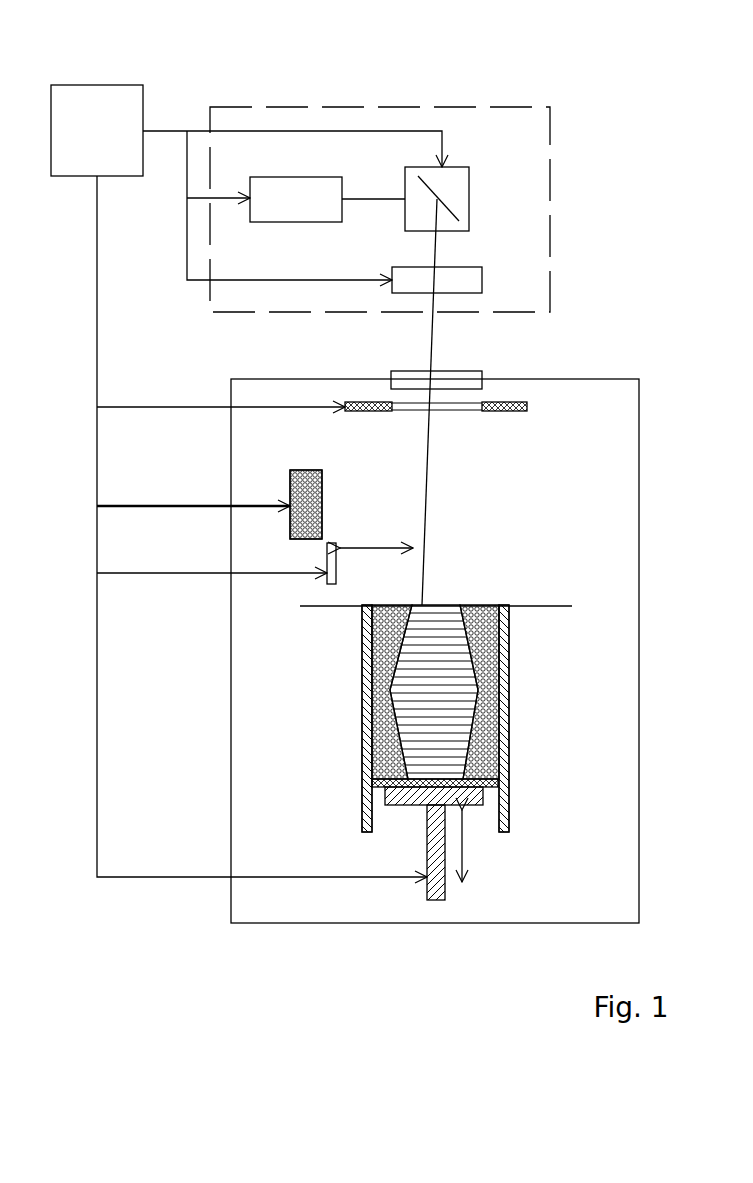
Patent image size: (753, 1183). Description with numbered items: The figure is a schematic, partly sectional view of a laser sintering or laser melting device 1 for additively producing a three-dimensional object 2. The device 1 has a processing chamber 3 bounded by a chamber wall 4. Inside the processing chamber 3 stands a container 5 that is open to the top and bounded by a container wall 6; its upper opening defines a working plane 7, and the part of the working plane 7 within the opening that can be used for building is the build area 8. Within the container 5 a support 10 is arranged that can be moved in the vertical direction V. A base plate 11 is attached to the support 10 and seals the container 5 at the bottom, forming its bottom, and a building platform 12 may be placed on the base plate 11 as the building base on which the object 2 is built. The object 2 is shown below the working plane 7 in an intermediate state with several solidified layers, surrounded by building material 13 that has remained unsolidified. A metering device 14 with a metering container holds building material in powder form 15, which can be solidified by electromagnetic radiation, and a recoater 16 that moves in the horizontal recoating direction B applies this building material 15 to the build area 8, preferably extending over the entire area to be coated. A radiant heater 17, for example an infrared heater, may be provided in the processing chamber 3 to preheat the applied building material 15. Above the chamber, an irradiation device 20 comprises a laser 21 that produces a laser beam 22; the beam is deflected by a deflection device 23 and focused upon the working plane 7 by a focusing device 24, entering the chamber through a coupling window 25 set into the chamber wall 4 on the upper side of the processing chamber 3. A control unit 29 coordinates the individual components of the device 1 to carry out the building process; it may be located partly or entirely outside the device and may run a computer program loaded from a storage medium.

The laser sintering or laser melting device 1 is at (613, 92).
The object 2 is at (452, 650).
The processing chamber 3 is at (578, 405).
The chamber wall 4 is at (231, 760).
The container 5 is at (509, 763).
The container wall 6 is at (505, 718).
The working plane 7 is at (545, 605).
The build area 8 is at (480, 605).
The support 10 is at (418, 804).
The base plate 11 is at (385, 797).
The building platform 12 is at (370, 782).
The building material 13 is at (365, 641).
The metering device 14 is at (304, 470).
The building material in powder form 15 is at (322, 505).
The recoater 16 is at (327, 555).
The radiant heater 17 is at (365, 403).
The irradiation device 20 is at (551, 200).
The laser 21 is at (296, 222).
The laser beam 22 is at (358, 199).
The deflection device 23 is at (460, 176).
The focusing device 24 is at (460, 277).
The coupling window 25 is at (460, 378).
The control unit 29 is at (97, 130).